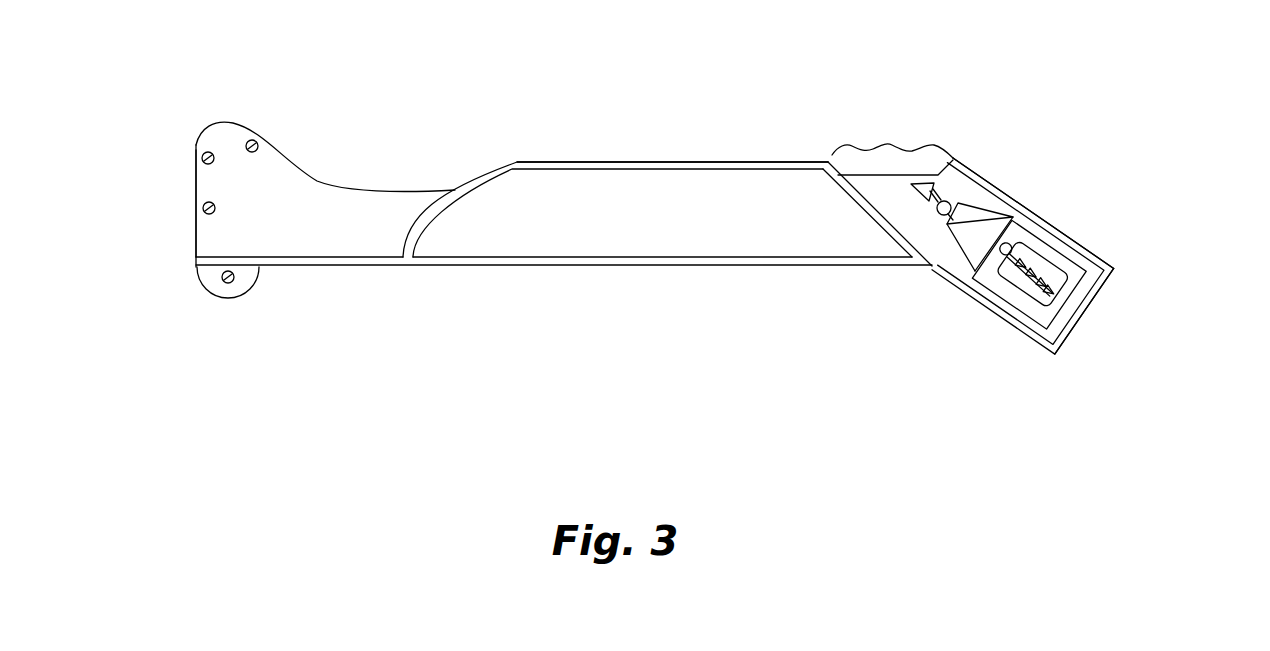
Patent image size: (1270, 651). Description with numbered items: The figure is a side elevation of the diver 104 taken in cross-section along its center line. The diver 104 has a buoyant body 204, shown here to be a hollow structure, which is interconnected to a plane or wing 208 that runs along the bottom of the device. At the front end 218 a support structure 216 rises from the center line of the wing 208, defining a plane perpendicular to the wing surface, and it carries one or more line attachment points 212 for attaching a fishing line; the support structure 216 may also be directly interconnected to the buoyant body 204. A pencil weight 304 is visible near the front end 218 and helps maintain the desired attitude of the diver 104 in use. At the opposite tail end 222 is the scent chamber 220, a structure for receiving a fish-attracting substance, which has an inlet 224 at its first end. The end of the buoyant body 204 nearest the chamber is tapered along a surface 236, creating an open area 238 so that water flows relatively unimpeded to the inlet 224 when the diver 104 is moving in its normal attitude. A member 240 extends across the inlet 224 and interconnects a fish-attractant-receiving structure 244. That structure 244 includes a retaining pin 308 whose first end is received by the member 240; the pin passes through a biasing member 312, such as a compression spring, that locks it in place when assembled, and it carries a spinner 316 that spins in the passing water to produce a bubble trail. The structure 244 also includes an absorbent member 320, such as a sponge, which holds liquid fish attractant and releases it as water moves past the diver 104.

The diver 104 is at (598, 156).
The buoyant body 204 is at (533, 167).
The wing 208 is at (350, 260).
The line attachment points 212 is at (208, 208).
The support structure 216 is at (314, 186).
The front end 218 is at (205, 238).
The scent chamber 220 is at (968, 193).
The tail end 222 is at (1117, 270).
The inlet 224 is at (953, 157).
The tapered surface 236 is at (827, 158).
The open area 238 is at (888, 138).
The member 240 is at (923, 188).
The fish-attractant-receiving structure 244 is at (1060, 273).
The pencil weight 304 is at (233, 282).
The retaining pin 308 is at (937, 210).
The biasing member 312 is at (1033, 310).
The spinner 316 is at (1030, 250).
The absorbent member 320 is at (1068, 268).